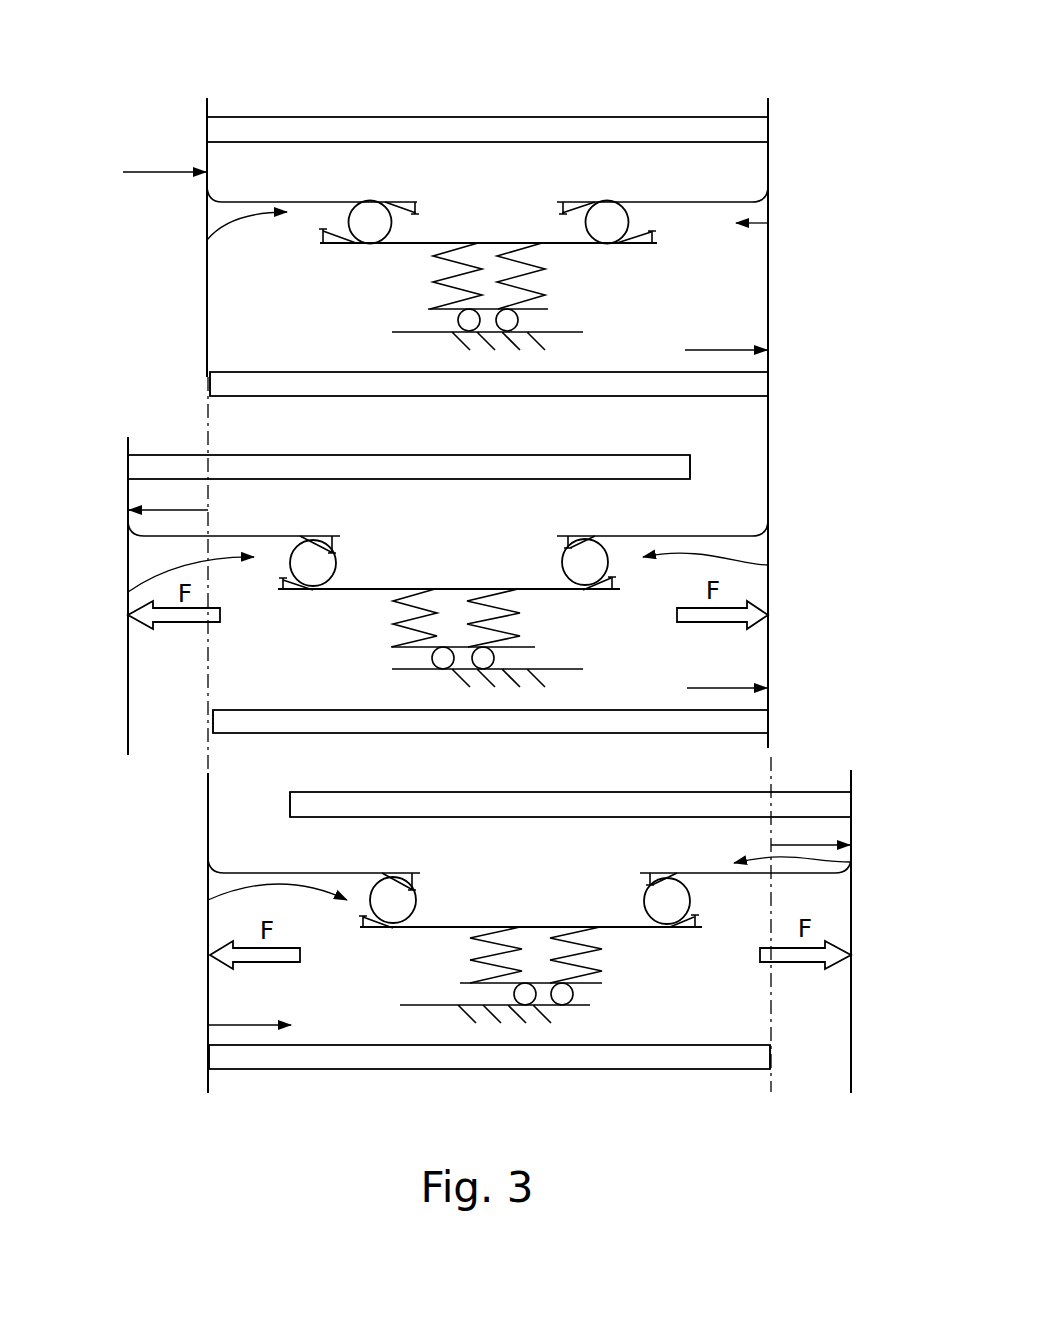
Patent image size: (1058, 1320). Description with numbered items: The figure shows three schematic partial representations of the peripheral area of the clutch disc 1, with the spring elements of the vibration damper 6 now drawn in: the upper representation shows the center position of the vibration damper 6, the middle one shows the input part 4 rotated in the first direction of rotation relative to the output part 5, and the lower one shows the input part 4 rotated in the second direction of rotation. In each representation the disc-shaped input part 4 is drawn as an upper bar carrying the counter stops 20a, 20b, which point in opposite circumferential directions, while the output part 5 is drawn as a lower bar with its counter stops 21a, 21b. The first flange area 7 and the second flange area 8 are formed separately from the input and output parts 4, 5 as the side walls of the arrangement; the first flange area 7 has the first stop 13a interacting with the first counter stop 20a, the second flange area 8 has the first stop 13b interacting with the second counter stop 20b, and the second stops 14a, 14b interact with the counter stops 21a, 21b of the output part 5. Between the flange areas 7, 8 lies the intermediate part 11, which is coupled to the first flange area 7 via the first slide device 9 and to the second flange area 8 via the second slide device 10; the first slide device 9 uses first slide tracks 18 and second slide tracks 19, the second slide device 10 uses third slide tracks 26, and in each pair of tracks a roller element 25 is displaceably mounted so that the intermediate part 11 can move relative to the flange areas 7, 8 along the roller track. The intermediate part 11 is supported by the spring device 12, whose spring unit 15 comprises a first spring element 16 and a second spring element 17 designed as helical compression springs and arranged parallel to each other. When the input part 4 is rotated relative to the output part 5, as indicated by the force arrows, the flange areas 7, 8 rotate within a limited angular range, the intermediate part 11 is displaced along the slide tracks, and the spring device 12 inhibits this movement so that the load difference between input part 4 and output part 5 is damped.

The clutch disc 1 is at (706, 74).
The input part 4 is at (390, 130).
The output part 5 is at (484, 385).
The vibration damper 6 is at (177, 266).
The first flange area 7 is at (205, 277).
The second flange area 8 is at (773, 278).
The first slide device 9 is at (207, 240).
The second slide device 10 is at (772, 220).
The intermediate part 11 is at (394, 246).
The spring device 12 is at (392, 331).
The first stop 13a is at (207, 112).
The first stop 13b is at (774, 109).
The second stop 14a is at (207, 405).
The second stop 14b is at (773, 415).
The spring unit 15 is at (558, 288).
The first spring element 16 is at (417, 306).
The second spring element 17 is at (533, 258).
The first slide track 18 is at (346, 236).
The second slide track 19 is at (419, 215).
The first counter stop 20a is at (218, 133).
The second counter stop 20b is at (742, 128).
The first counter stop 21a is at (217, 392).
The second counter stop 21b is at (753, 392).
The roller element 25 is at (366, 218).
The third slide track 26 is at (559, 222).